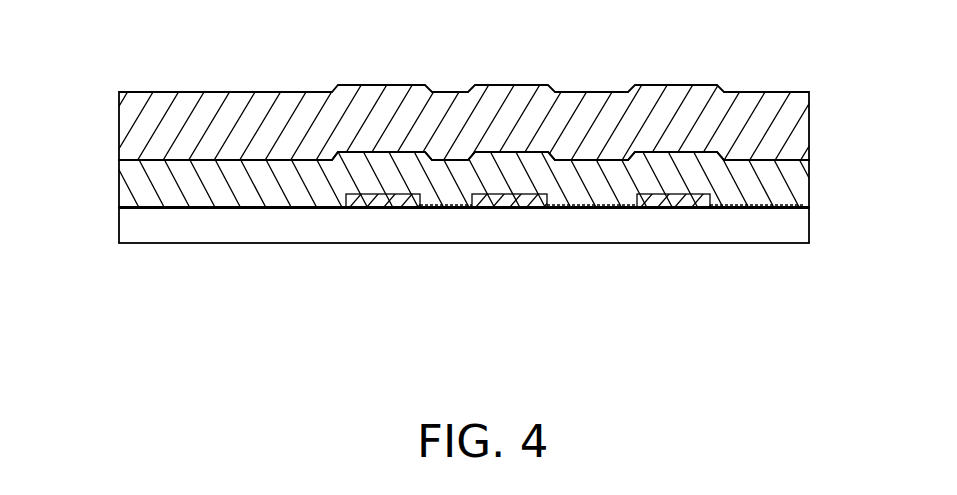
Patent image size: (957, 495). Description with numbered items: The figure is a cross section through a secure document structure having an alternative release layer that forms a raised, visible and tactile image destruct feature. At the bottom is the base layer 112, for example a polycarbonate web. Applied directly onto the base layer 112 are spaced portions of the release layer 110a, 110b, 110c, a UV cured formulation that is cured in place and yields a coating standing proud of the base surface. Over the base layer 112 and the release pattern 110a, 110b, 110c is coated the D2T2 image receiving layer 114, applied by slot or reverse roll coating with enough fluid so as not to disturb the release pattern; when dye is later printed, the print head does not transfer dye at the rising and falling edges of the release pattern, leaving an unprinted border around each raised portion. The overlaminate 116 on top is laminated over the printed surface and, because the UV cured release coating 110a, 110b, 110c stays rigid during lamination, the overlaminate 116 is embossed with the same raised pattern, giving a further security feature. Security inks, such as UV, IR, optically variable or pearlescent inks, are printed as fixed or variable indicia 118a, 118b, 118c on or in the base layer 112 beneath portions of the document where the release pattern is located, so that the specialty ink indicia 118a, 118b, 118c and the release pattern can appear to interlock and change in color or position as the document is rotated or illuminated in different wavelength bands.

The overlaminate 116 is at (130, 118).
The D2T2 image receiving layer 114 is at (795, 168).
The base layer 112 is at (793, 222).
The release layer 110a is at (367, 209).
The release layer 110b is at (497, 209).
The release layer 110c is at (650, 208).
The indicia 118a is at (436, 205).
The indicia 118b is at (565, 205).
The indicia 118c is at (731, 202).